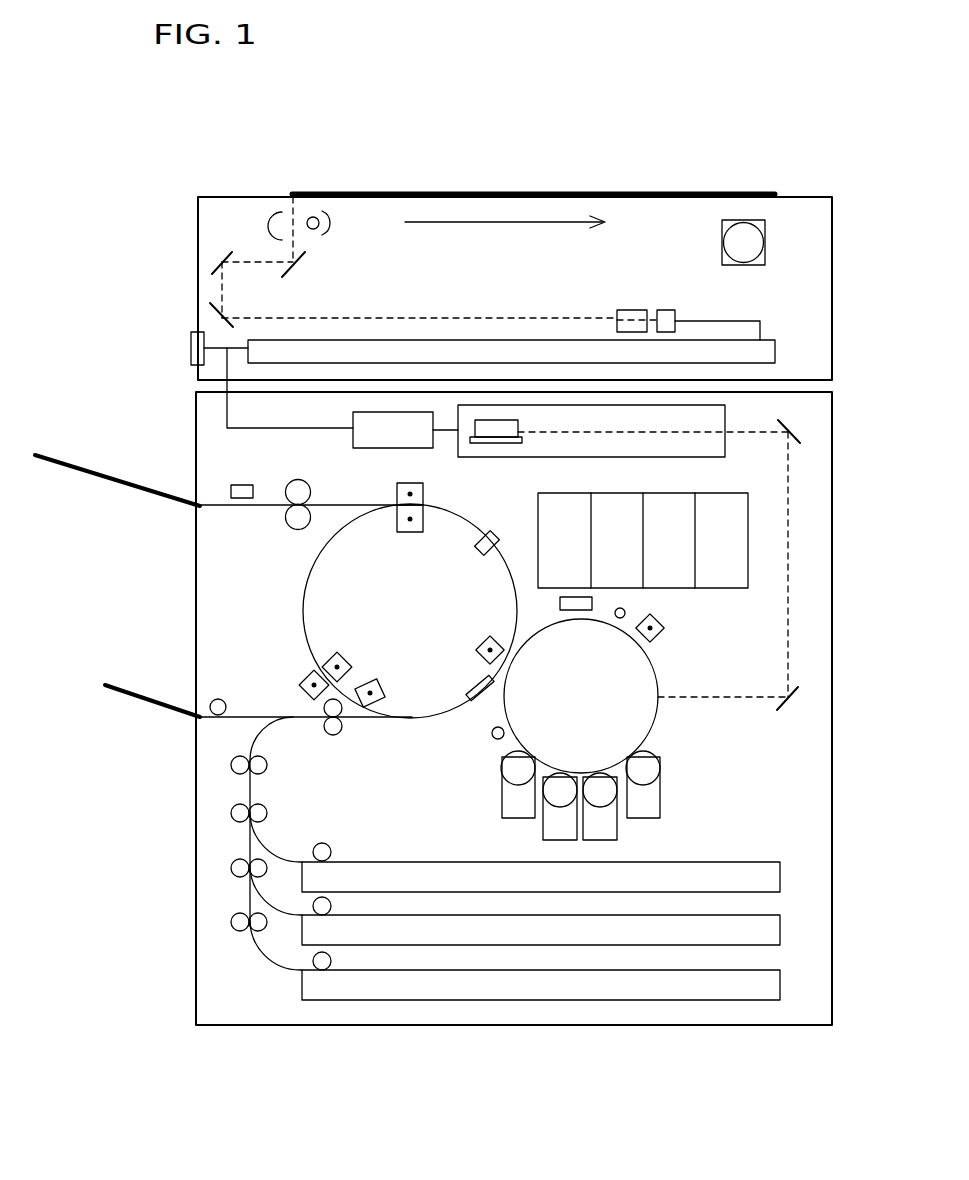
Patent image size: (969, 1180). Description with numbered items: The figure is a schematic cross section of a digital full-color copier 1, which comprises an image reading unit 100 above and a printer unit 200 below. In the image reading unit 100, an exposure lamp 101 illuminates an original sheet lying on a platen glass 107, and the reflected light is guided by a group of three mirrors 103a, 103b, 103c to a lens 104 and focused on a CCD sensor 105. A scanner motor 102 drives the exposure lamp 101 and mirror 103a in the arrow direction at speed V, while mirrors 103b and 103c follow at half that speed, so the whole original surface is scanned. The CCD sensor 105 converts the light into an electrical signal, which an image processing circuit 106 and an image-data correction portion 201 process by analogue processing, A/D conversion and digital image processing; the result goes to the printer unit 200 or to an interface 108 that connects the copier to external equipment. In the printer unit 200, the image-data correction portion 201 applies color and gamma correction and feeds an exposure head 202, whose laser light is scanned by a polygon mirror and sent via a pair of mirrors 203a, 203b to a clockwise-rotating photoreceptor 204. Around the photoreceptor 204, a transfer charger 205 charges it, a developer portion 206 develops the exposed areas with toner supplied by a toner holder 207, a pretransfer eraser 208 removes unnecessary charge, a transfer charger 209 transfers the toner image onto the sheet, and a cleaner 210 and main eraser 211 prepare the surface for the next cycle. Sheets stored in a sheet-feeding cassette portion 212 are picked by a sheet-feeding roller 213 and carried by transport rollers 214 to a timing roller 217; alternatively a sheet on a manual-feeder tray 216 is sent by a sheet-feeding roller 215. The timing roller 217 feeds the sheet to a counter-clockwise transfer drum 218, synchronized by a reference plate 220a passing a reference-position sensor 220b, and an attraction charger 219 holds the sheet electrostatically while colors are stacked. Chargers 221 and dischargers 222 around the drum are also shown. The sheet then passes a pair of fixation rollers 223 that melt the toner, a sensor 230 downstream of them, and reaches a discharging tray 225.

The digital full-color copier 1 is at (358, 162).
The image reading unit 100 is at (835, 240).
The exposure lamp 101 is at (343, 230).
The scanner motor 102 is at (769, 242).
The mirror 103a is at (291, 243).
The mirror 103b is at (241, 231).
The mirror 103c is at (413, 289).
The lens 104 is at (631, 302).
The CCD sensor 105 is at (708, 306).
The image processing circuit 106 is at (536, 353).
The platen glass 107 is at (533, 180).
The interface 108 is at (246, 380).
The printer unit 200 is at (835, 468).
The image-data correction portion 201 is at (405, 430).
The exposure head 202 is at (492, 443).
The mirror 203a is at (804, 548).
The mirror 203b is at (744, 707).
The photoreceptor 204 is at (659, 722).
The transfer charger 205 is at (674, 636).
The developer portion 206 is at (604, 795).
The toner holder 207 is at (643, 526).
The pretransfer eraser 208 is at (477, 747).
The transfer charger 209 is at (482, 636).
The cleaner 210 is at (555, 602).
The main eraser 211 is at (643, 601).
The sheet-feeding cassette portion 212 is at (565, 931).
The sheet-feeding roller 213 is at (322, 843).
The transport rollers 214 is at (233, 818).
The sheet-feeding roller for manual feeding 215 is at (223, 691).
The manual-feeder tray 216 is at (258, 687).
The timing roller 217 is at (333, 732).
The transfer drum 218 is at (302, 604).
The attraction charger 219 is at (382, 680).
The reference plate 220a is at (458, 677).
The reference-position sensor 220b is at (503, 528).
The separation charger 221 is at (410, 492).
The discharger 222 is at (330, 661).
The fixation rollers 223 is at (300, 490).
The discharging tray 225 is at (220, 480).
The sensor 230 is at (243, 475).